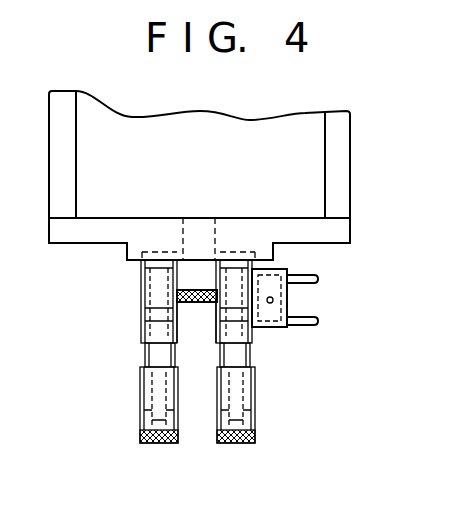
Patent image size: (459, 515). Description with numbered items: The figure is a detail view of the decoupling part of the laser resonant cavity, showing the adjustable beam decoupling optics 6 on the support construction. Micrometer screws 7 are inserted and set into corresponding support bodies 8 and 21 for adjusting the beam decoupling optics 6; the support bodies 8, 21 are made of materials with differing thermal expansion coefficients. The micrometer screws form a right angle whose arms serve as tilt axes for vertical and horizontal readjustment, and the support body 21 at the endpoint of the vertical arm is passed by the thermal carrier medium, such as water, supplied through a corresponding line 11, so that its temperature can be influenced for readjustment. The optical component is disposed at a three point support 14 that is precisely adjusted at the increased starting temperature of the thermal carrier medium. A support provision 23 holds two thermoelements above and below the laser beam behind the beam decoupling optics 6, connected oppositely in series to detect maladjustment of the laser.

The beam decoupling optics 6 is at (197, 290).
The micrometer screw 7 is at (256, 391).
The support body 8 is at (253, 337).
The line 11 is at (307, 323).
The three point support 14 is at (159, 301).
The support body 21 is at (283, 302).
The support provision 23 is at (205, 325).